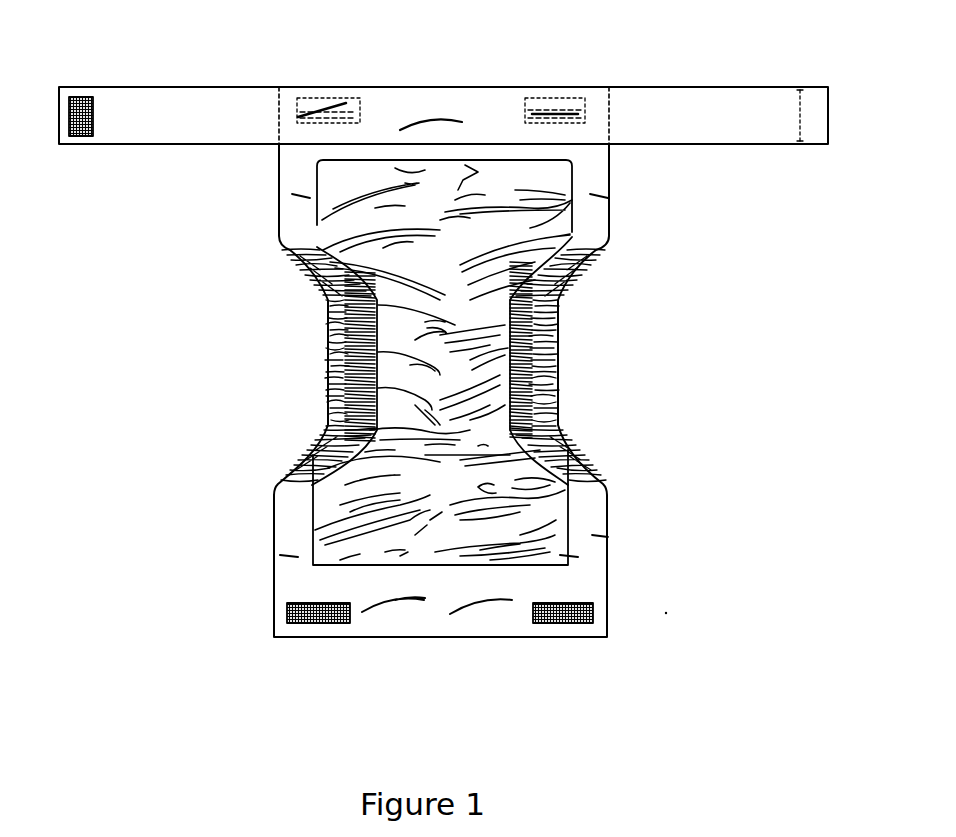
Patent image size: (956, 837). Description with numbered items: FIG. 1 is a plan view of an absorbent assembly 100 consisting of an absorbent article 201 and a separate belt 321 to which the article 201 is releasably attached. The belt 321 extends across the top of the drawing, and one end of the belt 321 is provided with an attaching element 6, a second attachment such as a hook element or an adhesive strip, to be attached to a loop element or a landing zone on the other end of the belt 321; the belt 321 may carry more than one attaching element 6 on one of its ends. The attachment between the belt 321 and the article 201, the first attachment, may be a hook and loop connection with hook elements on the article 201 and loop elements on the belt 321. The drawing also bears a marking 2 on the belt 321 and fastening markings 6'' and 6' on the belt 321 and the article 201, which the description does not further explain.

The absorbent assembly 100 is at (197, 375).
The belt 321 is at (203, 60).
The belt width dimension 2 is at (801, 115).
The attaching element 6 is at (81, 147).
The fastening elements on belt 6'' is at (441, 82).
The fastening elements on rear panel 6' is at (440, 651).
The absorbent article 201 is at (543, 340).